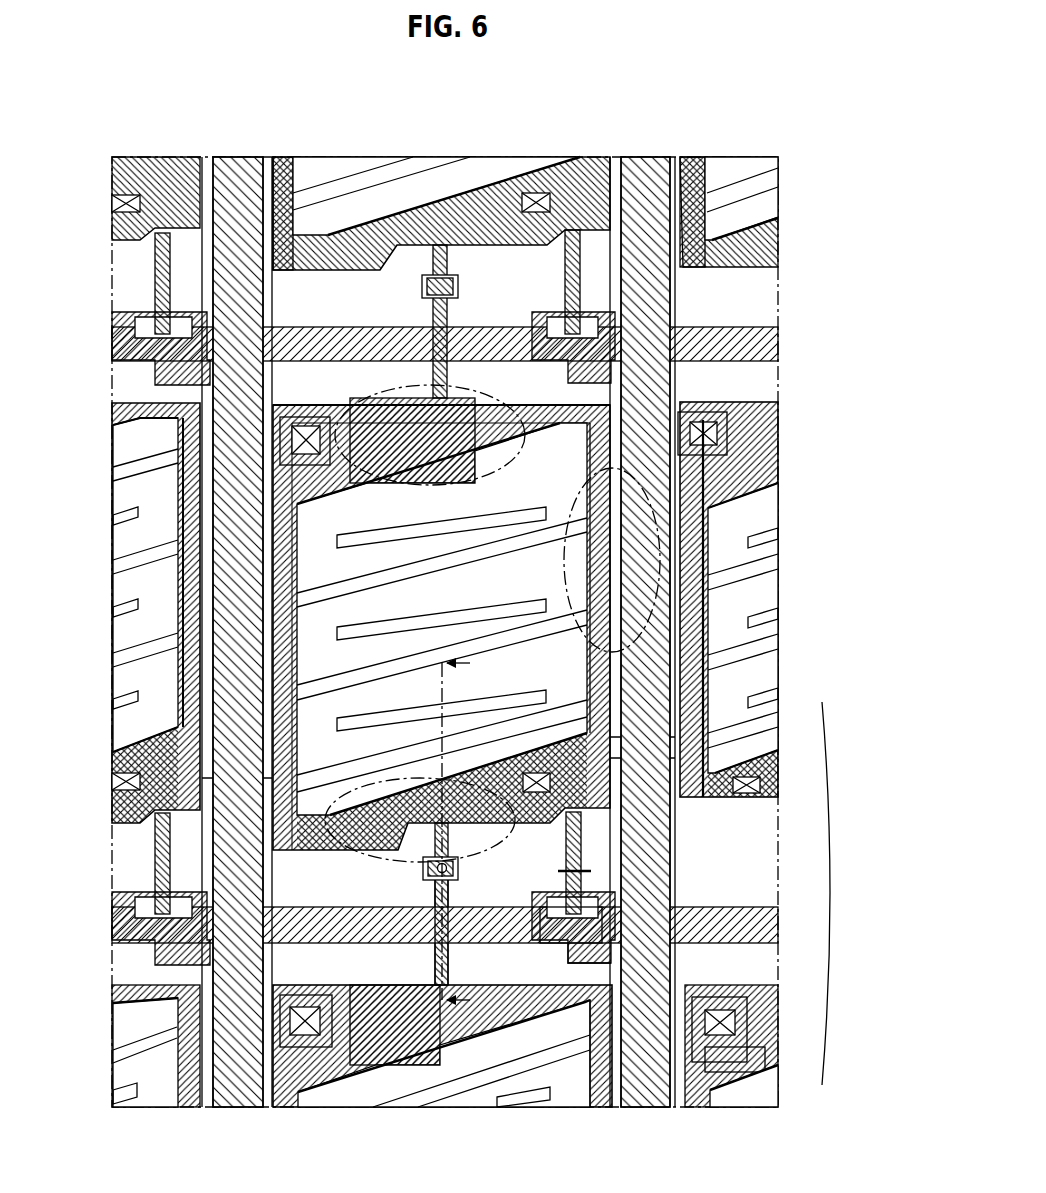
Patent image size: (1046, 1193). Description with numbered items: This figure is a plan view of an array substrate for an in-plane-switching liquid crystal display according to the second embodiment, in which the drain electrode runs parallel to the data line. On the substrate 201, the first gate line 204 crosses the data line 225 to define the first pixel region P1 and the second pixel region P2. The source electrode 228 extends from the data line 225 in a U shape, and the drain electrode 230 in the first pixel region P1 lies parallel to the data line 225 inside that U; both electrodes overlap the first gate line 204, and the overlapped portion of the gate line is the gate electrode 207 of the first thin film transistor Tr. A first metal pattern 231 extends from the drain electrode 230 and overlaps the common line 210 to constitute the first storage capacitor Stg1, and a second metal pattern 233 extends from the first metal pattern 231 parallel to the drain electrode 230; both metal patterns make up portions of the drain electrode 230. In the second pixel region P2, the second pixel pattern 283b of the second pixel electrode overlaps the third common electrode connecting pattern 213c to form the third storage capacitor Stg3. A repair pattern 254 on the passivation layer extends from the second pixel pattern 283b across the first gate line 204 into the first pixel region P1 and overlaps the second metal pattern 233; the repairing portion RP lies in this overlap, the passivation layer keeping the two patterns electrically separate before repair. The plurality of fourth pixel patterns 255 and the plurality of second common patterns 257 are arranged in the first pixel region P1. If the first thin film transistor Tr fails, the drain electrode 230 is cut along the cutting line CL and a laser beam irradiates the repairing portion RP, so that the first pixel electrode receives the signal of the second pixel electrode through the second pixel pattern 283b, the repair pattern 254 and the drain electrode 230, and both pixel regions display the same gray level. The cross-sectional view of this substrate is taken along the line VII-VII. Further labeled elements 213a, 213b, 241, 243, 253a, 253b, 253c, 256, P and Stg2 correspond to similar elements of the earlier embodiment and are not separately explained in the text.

The substrate 201 is at (603, 120).
The first gate line 204 is at (305, 905).
The gate electrode 207 is at (557, 898).
The common line 210 is at (208, 850).
The pixel electrode portion 213a is at (213, 642).
The pixel electrode portion 213b is at (612, 598).
The third common electrode connecting pattern 213c is at (315, 398).
The data line 225 is at (218, 678).
The source electrode 228 is at (598, 890).
The drain electrode 230 is at (566, 845).
The first metal pattern 231 is at (458, 865).
The second metal pattern 233 is at (421, 885).
The contact hole 241 is at (283, 440).
The contact hole 243 is at (540, 770).
The storage electrode line 253a is at (643, 655).
The storage electrode 253b is at (395, 395).
The storage electrode 253c is at (408, 838).
The repair pattern 254 is at (452, 875).
The fourth pixel patterns 255 is at (415, 695).
The pixel electrode frame 256 is at (285, 533).
The second common patterns 257 is at (372, 760).
The second pixel pattern 283b is at (365, 982).
The cutting line CL is at (560, 866).
The repairing portion RP is at (455, 870).
The first TFT Tr is at (556, 946).
The pixel P is at (836, 893).
The first pixel region P1 is at (596, 712).
The second pixel region P2 is at (582, 1070).
The first storage capacitor Stg1 is at (345, 800).
The storage region 2 Stg2 is at (568, 585).
The third storage capacitor Stg3 is at (430, 465).
The line VII- VII is at (477, 832).